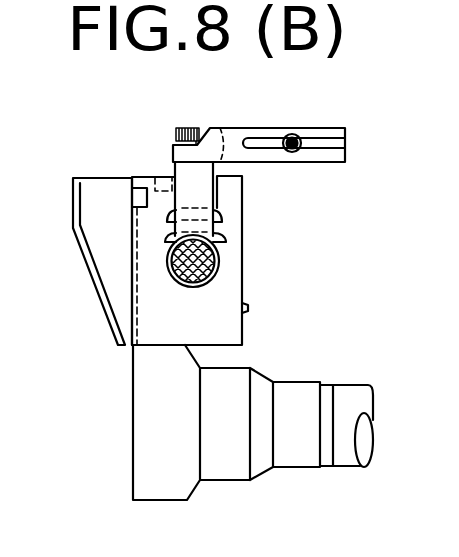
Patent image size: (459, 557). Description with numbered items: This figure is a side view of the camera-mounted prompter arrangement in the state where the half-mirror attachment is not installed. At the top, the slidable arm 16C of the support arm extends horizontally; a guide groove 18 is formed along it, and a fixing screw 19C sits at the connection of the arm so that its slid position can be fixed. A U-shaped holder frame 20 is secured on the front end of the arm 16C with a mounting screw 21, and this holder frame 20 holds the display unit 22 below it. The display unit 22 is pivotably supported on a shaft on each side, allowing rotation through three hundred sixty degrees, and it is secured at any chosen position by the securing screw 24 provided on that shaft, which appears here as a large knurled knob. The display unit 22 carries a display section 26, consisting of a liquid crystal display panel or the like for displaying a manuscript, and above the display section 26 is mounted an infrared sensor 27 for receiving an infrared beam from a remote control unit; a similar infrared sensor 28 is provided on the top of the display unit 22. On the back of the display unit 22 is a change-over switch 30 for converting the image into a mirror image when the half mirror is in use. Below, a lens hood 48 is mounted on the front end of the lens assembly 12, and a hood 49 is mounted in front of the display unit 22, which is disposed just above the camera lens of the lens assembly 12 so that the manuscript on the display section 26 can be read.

The lens assembly 12 is at (295, 468).
The slidable arm 16C is at (242, 128).
The guide grooves 18 is at (281, 137).
The fixing screw 19C is at (298, 152).
The U-shaped holder frame 20 is at (203, 190).
The mounting screw 21 is at (187, 127).
The display unit 22 is at (243, 250).
The securing screw 24 is at (190, 288).
The display section 26 is at (132, 268).
The infrared sensor 27 is at (137, 182).
The infrared sensor 28 is at (163, 176).
The change-over switch 30 is at (250, 311).
The lens hood 48 is at (163, 500).
The hood 49 is at (93, 181).